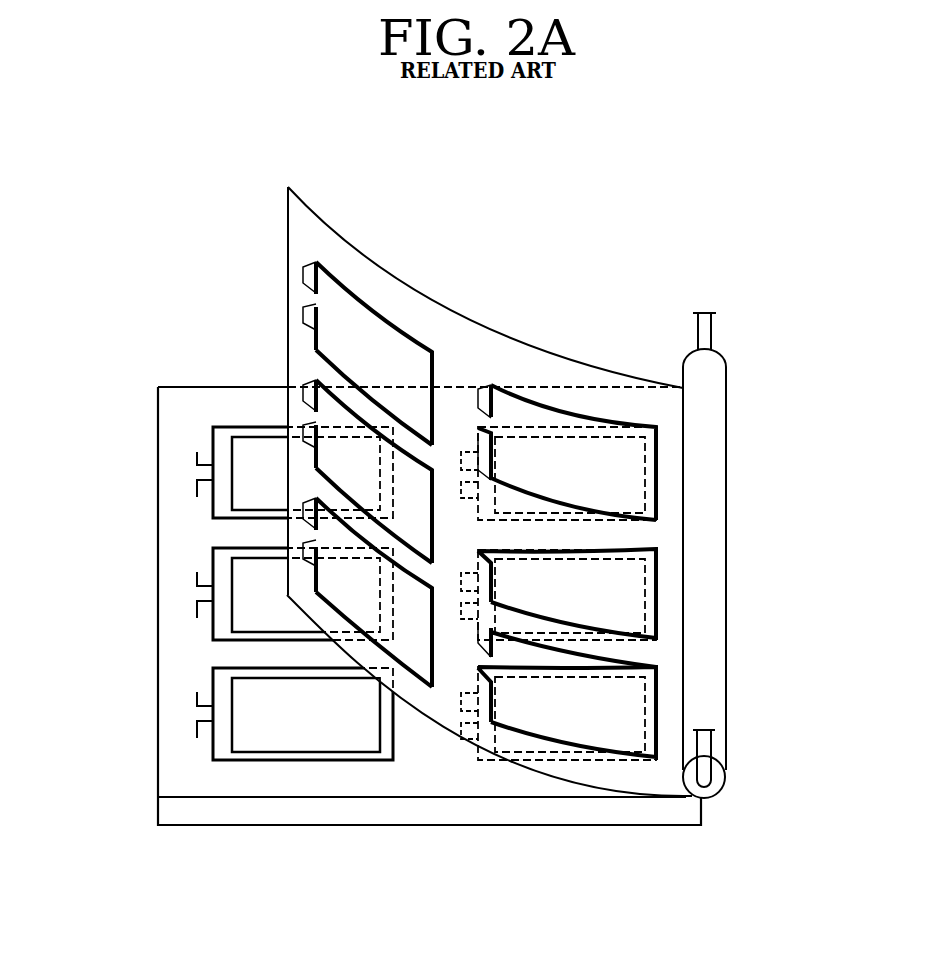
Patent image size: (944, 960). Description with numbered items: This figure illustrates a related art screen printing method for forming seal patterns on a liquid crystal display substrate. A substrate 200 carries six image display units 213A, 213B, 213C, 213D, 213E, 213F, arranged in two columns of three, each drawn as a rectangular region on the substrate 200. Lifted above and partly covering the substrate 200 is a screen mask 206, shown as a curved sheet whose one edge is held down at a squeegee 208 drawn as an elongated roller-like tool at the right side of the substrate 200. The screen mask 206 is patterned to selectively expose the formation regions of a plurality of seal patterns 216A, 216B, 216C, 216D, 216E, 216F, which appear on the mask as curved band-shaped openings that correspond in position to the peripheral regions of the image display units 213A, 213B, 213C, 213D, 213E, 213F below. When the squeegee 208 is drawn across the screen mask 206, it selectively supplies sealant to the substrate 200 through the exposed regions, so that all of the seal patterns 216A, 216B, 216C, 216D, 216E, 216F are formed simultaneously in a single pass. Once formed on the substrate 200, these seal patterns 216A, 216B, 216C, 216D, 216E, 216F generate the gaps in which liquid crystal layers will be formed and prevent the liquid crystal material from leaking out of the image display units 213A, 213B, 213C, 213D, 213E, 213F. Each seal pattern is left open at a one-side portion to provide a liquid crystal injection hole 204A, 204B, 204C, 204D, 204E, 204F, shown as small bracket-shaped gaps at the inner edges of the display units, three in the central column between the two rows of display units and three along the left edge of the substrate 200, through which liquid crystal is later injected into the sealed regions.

The substrate 200 is at (685, 815).
The liquid crystal injection hole 204A is at (462, 471).
The liquid crystal injection hole 204B is at (462, 596).
The liquid crystal injection hole 204C is at (460, 718).
The liquid crystal injection hole 204D is at (194, 471).
The liquid crystal injection hole 204E is at (194, 592).
The liquid crystal injection hole 204F is at (194, 712).
The screen mask 206 is at (328, 228).
The squeegee 208 is at (712, 382).
The image display unit 213A is at (608, 485).
The image display unit 213B is at (608, 609).
The image display unit 213C is at (608, 727).
The image display unit 213D is at (278, 483).
The image display unit 213E is at (278, 603).
The image display unit 213F is at (278, 723).
The seal pattern 216A is at (553, 428).
The seal pattern 216B is at (553, 546).
The seal pattern 216C is at (553, 667).
The seal pattern 216D is at (213, 430).
The seal pattern 216E is at (213, 550).
The seal pattern 216F is at (213, 670).